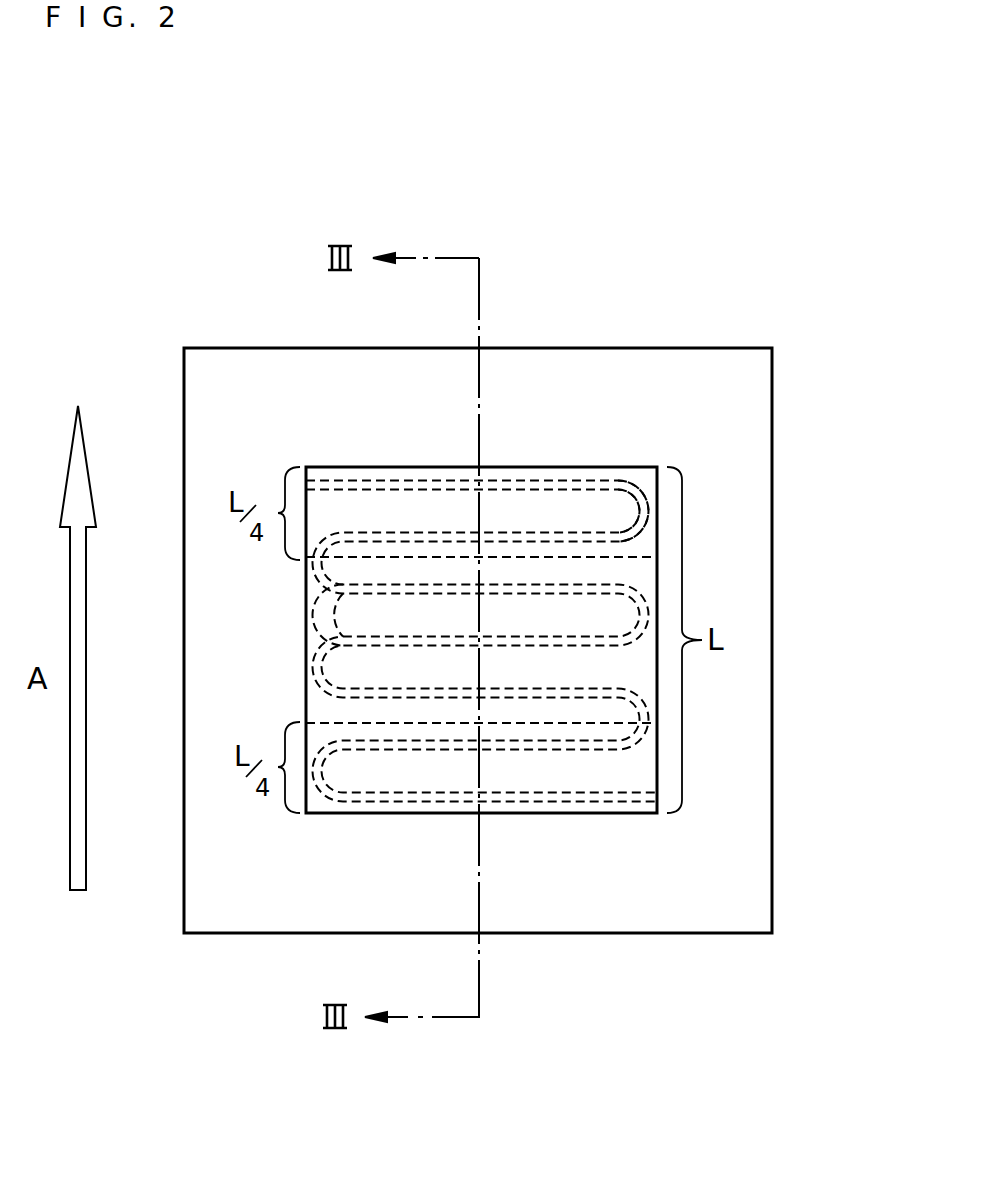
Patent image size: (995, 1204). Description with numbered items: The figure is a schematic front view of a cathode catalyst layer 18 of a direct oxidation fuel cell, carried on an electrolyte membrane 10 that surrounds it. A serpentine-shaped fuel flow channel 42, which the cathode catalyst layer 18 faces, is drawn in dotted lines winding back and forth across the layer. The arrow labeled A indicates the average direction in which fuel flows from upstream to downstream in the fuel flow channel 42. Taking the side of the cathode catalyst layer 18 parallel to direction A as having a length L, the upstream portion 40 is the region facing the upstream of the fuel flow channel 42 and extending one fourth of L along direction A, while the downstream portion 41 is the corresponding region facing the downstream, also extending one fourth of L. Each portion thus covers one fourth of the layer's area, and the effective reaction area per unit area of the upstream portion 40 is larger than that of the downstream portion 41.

The electrolyte membrane 10 is at (700, 366).
The cathode catalyst layer 18 is at (314, 638).
The upstream portion 40 is at (587, 766).
The downstream portion 41 is at (548, 518).
The fuel flow channel 42 is at (657, 518).